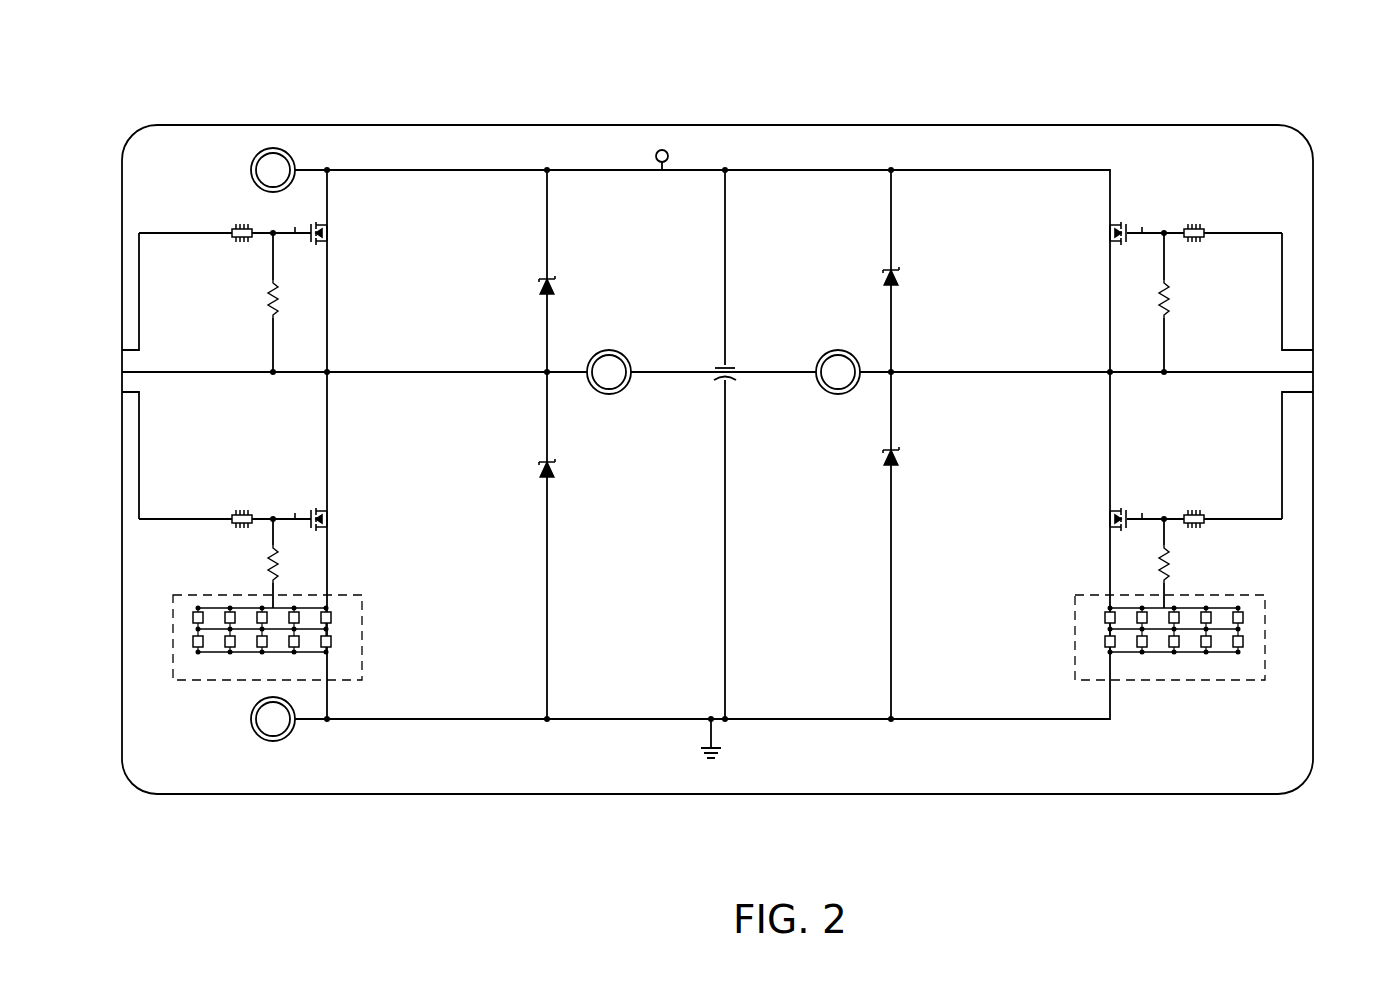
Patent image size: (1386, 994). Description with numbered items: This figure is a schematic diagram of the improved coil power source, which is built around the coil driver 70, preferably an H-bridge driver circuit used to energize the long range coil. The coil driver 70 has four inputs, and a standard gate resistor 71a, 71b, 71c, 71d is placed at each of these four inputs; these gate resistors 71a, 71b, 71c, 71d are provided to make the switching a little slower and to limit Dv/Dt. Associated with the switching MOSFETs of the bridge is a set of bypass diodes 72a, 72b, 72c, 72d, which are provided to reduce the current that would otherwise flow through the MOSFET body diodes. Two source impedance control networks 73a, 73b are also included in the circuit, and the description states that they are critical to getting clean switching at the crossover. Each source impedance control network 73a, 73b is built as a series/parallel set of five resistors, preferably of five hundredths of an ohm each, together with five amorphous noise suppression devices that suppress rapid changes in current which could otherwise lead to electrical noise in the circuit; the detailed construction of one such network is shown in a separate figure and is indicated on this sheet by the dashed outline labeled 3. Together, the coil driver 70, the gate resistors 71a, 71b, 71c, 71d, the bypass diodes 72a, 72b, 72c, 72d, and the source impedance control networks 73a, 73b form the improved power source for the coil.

The coil driver 70 is at (356, 88).
The gate resistor 71a is at (242, 224).
The gate resistor 71b is at (1195, 224).
The gate resistor 71c is at (232, 522).
The gate resistor 71d is at (1204, 522).
The bypass diode 72a is at (552, 277).
The bypass diode 72b is at (893, 268).
The bypass diode 72c is at (552, 476).
The bypass diode 72d is at (888, 464).
The source impedance control network 73a is at (228, 653).
The source impedance control network 73b is at (1160, 653).
The shunt resistor module 3 is at (173, 645).